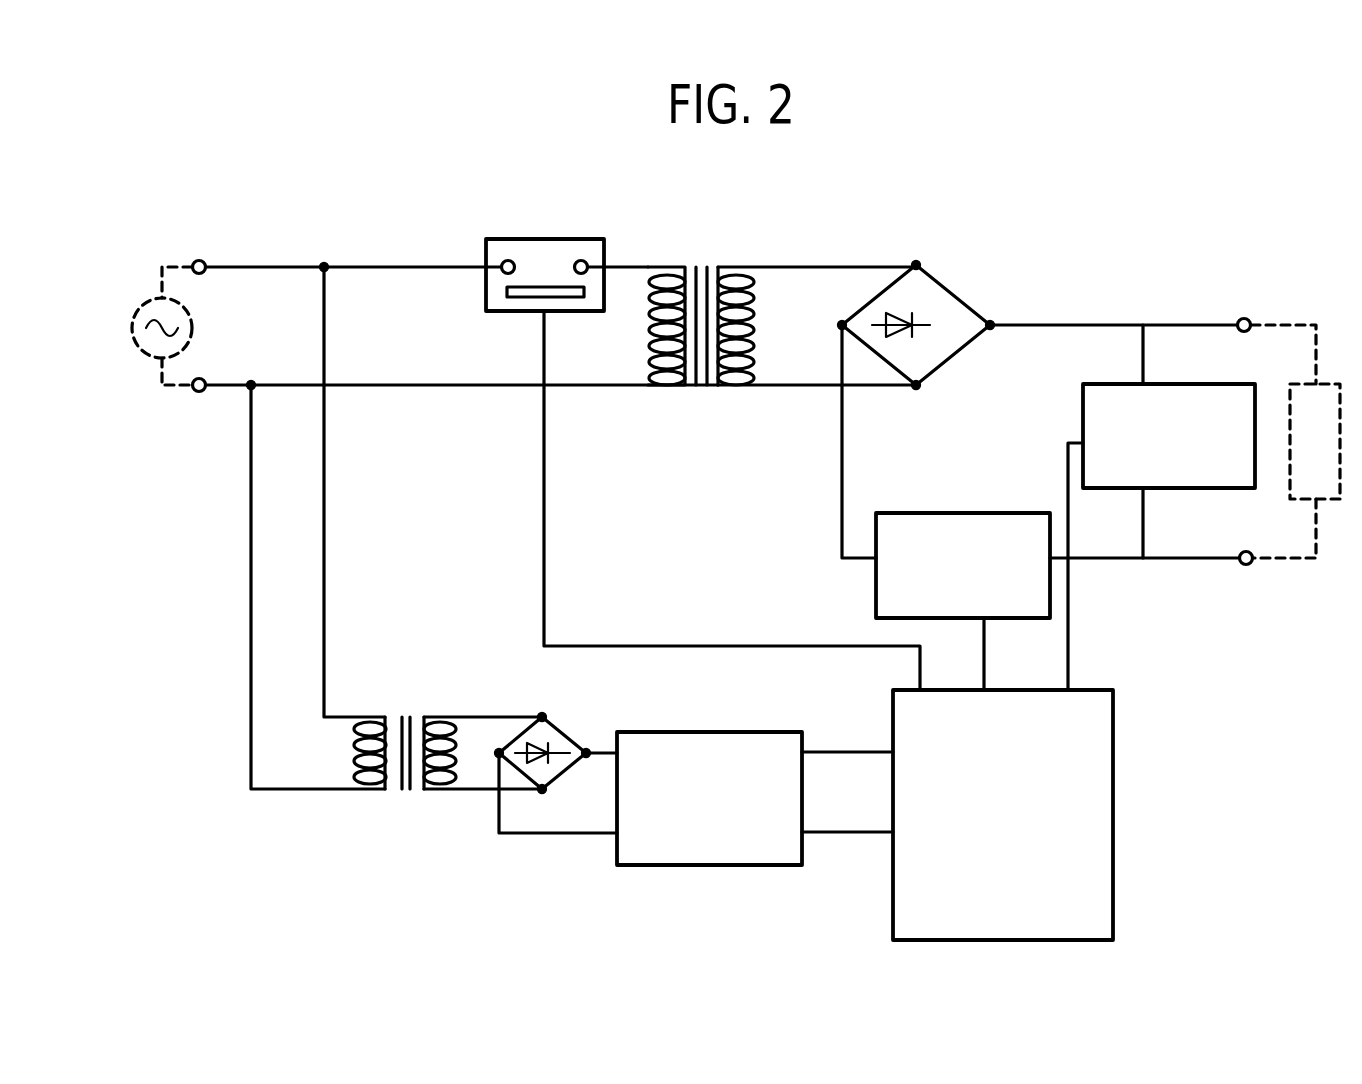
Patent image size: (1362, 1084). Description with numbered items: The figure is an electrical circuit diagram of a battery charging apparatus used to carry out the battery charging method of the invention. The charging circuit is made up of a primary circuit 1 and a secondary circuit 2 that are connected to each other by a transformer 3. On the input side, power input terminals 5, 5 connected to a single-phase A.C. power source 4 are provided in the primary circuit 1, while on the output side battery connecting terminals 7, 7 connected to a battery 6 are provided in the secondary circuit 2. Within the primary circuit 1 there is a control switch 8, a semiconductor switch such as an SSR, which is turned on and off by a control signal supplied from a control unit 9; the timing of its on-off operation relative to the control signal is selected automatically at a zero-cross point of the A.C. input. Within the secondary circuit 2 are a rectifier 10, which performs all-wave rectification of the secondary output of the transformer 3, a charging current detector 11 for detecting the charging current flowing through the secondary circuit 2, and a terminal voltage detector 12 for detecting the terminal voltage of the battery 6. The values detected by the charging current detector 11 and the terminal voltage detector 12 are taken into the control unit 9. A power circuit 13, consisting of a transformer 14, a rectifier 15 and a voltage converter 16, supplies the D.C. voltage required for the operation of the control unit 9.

The primary circuit 1 is at (247, 266).
The secondary circuit 2 is at (1097, 325).
The transformer 3 is at (710, 265).
The single-phase A.C. power source 4 is at (192, 322).
The power input terminals 5 is at (199, 260).
The battery 6 is at (1289, 480).
The battery connecting terminals 7 is at (1244, 318).
The control switch 8 is at (585, 238).
The control unit 9 is at (1090, 806).
The rectifier 10 is at (950, 292).
The charging current detector 11 is at (979, 512).
The terminal voltage detector 12 is at (1203, 383).
The power circuit 13 is at (618, 728).
The transformer 14 is at (411, 716).
The rectifier 15 is at (562, 731).
The voltage converter 16 is at (740, 731).